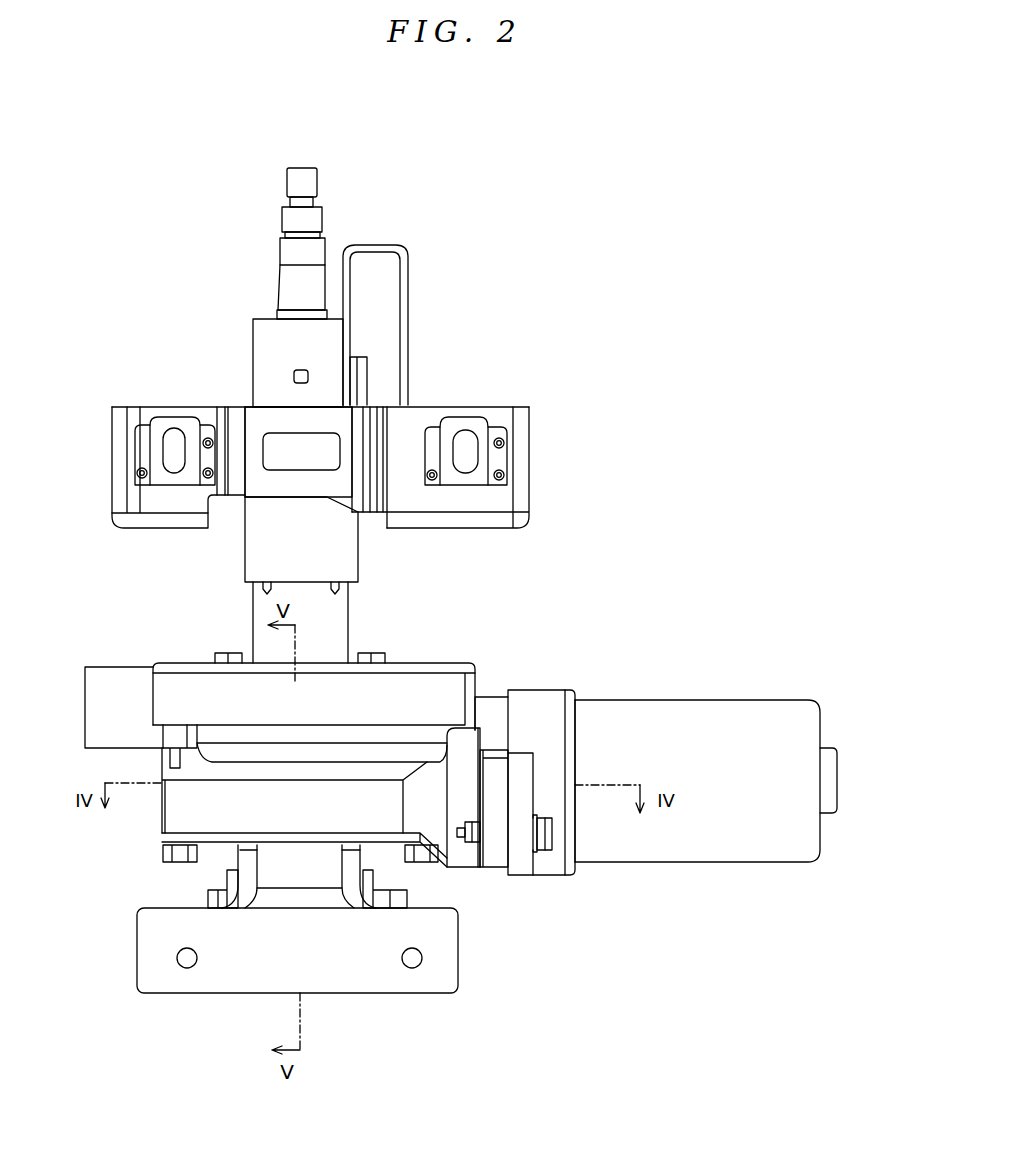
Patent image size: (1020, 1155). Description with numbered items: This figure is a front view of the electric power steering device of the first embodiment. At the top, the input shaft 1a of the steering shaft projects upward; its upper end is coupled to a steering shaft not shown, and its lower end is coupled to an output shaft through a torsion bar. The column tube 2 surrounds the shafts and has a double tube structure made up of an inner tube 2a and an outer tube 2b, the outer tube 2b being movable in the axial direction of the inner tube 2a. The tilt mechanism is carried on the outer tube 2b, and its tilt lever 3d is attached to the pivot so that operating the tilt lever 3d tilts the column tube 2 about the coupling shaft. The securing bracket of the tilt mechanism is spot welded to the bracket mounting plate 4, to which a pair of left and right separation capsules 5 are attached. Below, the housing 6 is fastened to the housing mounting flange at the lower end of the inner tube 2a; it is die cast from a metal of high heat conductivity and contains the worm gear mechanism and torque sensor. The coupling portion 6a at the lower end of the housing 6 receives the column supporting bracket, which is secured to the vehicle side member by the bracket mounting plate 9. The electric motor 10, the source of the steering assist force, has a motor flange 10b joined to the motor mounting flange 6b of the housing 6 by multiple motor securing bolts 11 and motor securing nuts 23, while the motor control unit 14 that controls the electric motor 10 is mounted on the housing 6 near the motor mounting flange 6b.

The input shaft 1a is at (283, 289).
The tilt lever 3d is at (398, 323).
The separation capsules 5 is at (163, 425).
The bracket mounting plate 4 is at (518, 488).
The column tube 2 is at (243, 580).
The inner tube 2a is at (262, 600).
The outer tube 2b is at (262, 552).
The motor control unit 14 is at (175, 700).
The housing 6 is at (173, 827).
The coupling portion 6a is at (250, 858).
The motor mounting flange 6b is at (500, 855).
The motor securing nuts 23 is at (472, 842).
The motor flange 10b is at (522, 863).
The motor securing bolts 11 is at (542, 852).
The electric motor 10 is at (693, 713).
The bracket mounting plate 9 is at (165, 977).